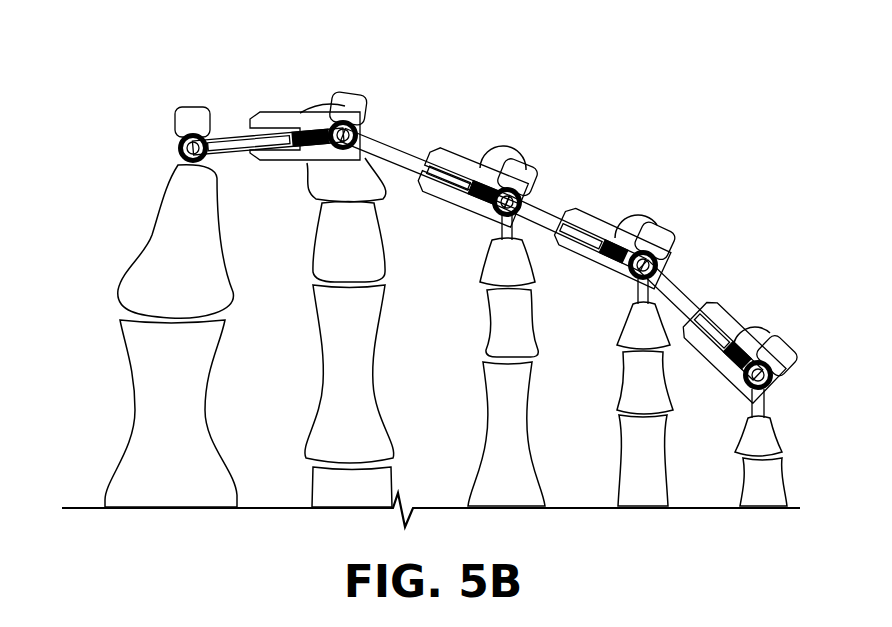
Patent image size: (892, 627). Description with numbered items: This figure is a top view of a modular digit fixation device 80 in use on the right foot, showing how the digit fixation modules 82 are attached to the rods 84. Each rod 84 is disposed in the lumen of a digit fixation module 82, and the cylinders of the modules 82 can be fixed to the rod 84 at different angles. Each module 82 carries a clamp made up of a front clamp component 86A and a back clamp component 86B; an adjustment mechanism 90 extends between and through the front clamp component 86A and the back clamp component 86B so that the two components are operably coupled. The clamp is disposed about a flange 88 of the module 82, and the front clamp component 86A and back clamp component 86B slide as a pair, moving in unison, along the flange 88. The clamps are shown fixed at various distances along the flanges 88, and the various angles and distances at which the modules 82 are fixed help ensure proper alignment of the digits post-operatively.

The modular digit fixation device 80 is at (435, 230).
The digit fixation module 82 is at (504, 250).
The rod 84 is at (182, 160).
The front clamp component 86A is at (447, 147).
The back clamp component 86B is at (437, 187).
The flange 88 is at (408, 148).
The adjustment mechanism 90 is at (316, 103).